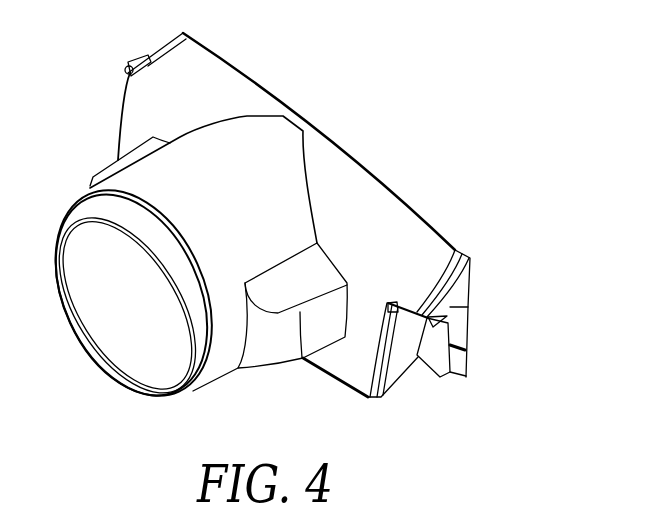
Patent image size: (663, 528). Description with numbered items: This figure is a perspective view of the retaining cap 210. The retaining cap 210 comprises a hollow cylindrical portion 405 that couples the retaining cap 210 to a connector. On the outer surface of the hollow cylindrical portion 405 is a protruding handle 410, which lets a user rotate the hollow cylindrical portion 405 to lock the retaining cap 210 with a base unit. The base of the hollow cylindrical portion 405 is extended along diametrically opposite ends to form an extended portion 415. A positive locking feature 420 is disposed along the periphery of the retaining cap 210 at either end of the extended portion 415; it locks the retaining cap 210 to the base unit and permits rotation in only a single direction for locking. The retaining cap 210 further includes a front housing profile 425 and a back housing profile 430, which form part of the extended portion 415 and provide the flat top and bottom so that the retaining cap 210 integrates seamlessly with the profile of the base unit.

The retaining cap 210 is at (497, 84).
The hollow cylindrical portion 405 is at (103, 338).
The protruding handle 410 is at (106, 165).
The extended portion 415 is at (235, 86).
The positive locking feature 420 is at (137, 58).
The front housing profile 425 is at (415, 208).
The back housing profile 430 is at (347, 389).